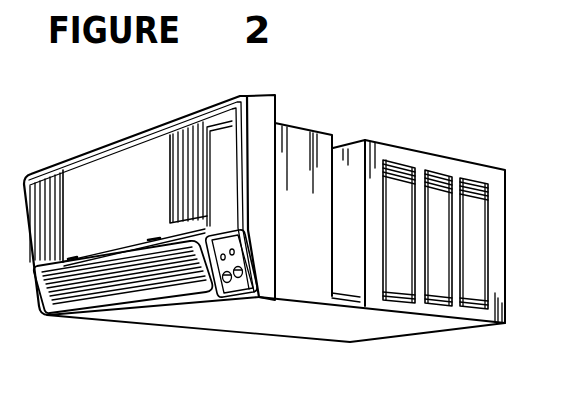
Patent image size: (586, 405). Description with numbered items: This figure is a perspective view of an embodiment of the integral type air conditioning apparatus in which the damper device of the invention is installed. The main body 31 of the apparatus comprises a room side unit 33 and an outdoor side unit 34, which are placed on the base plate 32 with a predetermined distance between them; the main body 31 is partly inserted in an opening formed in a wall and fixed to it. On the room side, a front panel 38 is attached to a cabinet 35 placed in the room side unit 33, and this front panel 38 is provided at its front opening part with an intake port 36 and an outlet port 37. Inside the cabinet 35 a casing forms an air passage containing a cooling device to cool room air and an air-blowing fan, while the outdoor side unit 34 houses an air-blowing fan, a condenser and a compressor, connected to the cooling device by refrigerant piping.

The main body 31 is at (394, 130).
The base plate 32 is at (282, 317).
The room side unit 33 is at (278, 122).
The outdoor side unit 34 is at (466, 157).
The cabinet 35 is at (322, 130).
The intake port 36 is at (175, 172).
The outlet port 37 is at (83, 295).
The front panel 38 is at (78, 156).